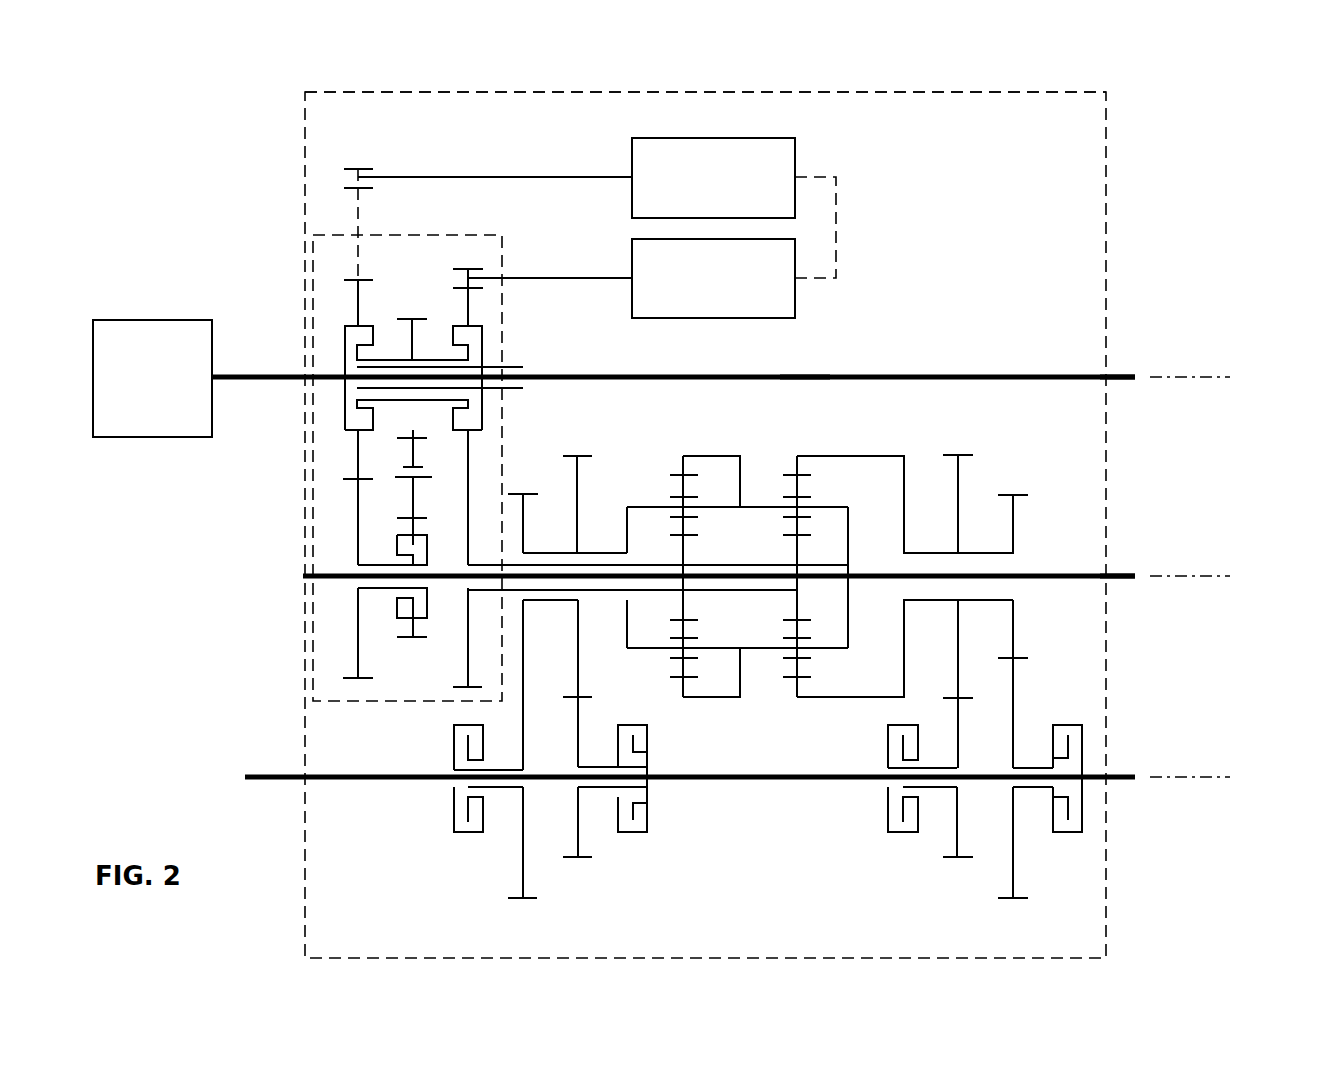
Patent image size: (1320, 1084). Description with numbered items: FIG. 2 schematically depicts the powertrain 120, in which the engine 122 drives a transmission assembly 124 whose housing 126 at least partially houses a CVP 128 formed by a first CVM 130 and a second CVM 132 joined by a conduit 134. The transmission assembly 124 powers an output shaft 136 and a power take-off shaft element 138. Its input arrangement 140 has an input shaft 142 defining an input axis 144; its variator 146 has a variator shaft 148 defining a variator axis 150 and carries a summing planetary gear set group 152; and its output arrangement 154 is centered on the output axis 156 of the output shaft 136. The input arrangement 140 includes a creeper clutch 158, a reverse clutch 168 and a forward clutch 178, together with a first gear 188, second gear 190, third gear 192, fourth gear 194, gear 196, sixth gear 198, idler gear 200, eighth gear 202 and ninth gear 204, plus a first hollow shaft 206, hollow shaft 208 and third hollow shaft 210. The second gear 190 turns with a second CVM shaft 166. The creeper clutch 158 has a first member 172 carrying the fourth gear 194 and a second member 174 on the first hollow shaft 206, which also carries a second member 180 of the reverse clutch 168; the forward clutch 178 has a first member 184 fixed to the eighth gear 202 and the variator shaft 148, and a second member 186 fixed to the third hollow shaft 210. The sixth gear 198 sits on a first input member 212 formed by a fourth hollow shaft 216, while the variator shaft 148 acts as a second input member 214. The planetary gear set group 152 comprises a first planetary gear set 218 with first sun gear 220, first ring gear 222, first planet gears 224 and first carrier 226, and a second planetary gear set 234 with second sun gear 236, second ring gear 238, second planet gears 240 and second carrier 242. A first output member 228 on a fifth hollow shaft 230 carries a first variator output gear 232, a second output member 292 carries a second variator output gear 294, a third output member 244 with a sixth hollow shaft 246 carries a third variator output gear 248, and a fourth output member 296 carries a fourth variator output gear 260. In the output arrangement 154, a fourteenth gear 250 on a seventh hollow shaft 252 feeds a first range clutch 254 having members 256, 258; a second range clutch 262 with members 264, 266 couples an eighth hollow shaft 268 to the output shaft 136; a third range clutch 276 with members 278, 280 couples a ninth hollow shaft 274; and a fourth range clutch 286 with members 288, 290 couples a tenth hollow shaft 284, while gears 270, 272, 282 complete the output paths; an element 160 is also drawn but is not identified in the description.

The powertrain 120 is at (195, 103).
The engine 122 is at (176, 318).
The transmission assembly 124 is at (818, 88).
The housing 126 is at (636, 91).
The CVP 128 is at (840, 145).
The first CVM 130 is at (662, 137).
The second CVM 132 is at (630, 258).
The conduit 134 is at (838, 232).
The output shaft 136 is at (1110, 780).
The power take-off shaft element 138 is at (1117, 382).
The input arrangement 140 is at (325, 234).
The input shaft 142 is at (968, 375).
The input axis 144 is at (1196, 375).
The variator 146 is at (808, 408).
The variator shaft 148 is at (1120, 580).
The variator axis 150 is at (1220, 574).
The summing planetary gear set group 152 is at (768, 455).
The output arrangement 154 is at (575, 176).
The output axis 156 is at (1192, 776).
The first clutch 158 is at (522, 348).
The connecting member 160 is at (590, 443).
The second CVM shaft 166 is at (972, 448).
The second clutch 168 is at (338, 415).
The first member of creeper clutch 172 is at (482, 345).
The second member of creeper clutch 174 is at (482, 412).
The third clutch 178 is at (340, 478).
The second member of reverse clutch 180 is at (345, 350).
The first member of forward clutch 184 is at (372, 592).
The second member of forward clutch 186 is at (450, 515).
The first gear 188 is at (372, 168).
The second gear 190 is at (467, 268).
The third gear 192 is at (344, 290).
The fourth gear 194 is at (470, 310).
The gear 196 is at (416, 318).
The sixth gear 198 is at (470, 650).
The idler gear 200 is at (403, 468).
The eighth gear 202 is at (355, 680).
The ninth gear 204 is at (396, 480).
The first hollow shaft 206 is at (432, 430).
The hollow shaft 208 is at (520, 390).
The third hollow shaft 210 is at (397, 612).
The first input member 212 is at (460, 700).
The second input member 214 is at (1128, 570).
The fourth hollow shaft 216 is at (656, 593).
The first planetary gear set 218 is at (698, 700).
The first sun gear 220 is at (690, 552).
The first ring gear 222 is at (680, 470).
The first planet gears 224 is at (690, 520).
The first carrier 226 is at (641, 505).
The first output member 228 is at (556, 630).
The fifth hollow shaft 230 is at (602, 550).
The first variator output gear 232 is at (563, 522).
The second planetary gear set 234 is at (800, 704).
The second sun gear 236 is at (840, 548).
The second ring gear 238 is at (800, 458).
The second planet gears 240 is at (790, 620).
The second carrier 242 is at (878, 496).
The third output member 244 is at (1005, 635).
The sixth hollow shaft 246 is at (936, 552).
The third variator output gear 248 is at (1016, 530).
The fourteenth gear 250 is at (527, 900).
The seventh hollow shaft 252 is at (512, 788).
The fourth clutch 254 is at (455, 836).
The first member of fourth clutch 256 is at (455, 803).
The second member of fourth clutch 258 is at (462, 788).
The fourth variator output gear 260 is at (956, 680).
The fifth clutch 262 is at (1082, 840).
The first member of fifth clutch 264 is at (1078, 738).
The second member of fifth clutch 266 is at (1072, 805).
The eighth hollow shaft 268 is at (1033, 766).
The gear 270 is at (1022, 900).
The gear 272 is at (586, 860).
The ninth hollow shaft 274 is at (600, 790).
The sixth clutch 276 is at (650, 835).
The first member of sixth clutch 278 is at (648, 798).
The second member of sixth clutch 280 is at (633, 750).
The gear 282 is at (958, 860).
The tenth hollow shaft 284 is at (937, 790).
The seventh clutch 286 is at (910, 853).
The first member of seventh clutch 288 is at (900, 833).
The second member of seventh clutch 290 is at (888, 745).
The second output member 292 is at (582, 690).
The second variator output gear 294 is at (610, 634).
The fourth output member 296 is at (970, 514).